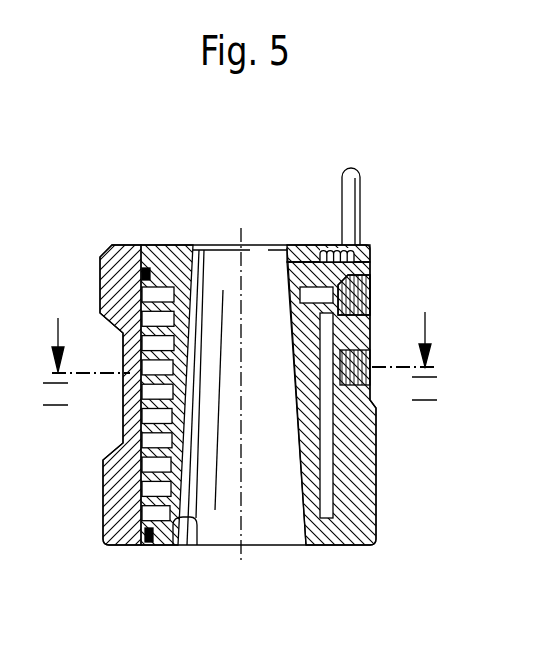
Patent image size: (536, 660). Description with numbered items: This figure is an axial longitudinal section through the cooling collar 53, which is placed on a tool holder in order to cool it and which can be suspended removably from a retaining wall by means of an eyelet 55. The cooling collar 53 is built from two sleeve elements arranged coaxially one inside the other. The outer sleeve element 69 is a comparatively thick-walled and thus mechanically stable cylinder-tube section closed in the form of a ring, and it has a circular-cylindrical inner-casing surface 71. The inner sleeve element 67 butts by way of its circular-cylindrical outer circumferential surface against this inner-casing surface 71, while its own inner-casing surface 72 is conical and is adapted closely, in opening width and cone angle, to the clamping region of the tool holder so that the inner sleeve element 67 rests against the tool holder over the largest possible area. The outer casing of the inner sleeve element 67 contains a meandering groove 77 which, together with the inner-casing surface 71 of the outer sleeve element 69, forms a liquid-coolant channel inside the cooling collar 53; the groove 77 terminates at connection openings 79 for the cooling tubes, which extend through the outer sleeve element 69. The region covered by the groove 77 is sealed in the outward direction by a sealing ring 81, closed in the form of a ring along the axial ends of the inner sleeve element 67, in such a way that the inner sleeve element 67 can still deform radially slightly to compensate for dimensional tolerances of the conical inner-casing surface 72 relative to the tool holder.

The cooling collar 53 is at (158, 198).
The eyelet 55 is at (357, 176).
The inner sleeve element 67 is at (193, 246).
The outer sleeve element 69 is at (100, 280).
The inner-casing surface 71 is at (152, 486).
The inner-casing surface 72 is at (199, 548).
The meandering groove 77 is at (160, 441).
The connection opening 79 is at (376, 352).
The sealing ring 81 is at (127, 244).